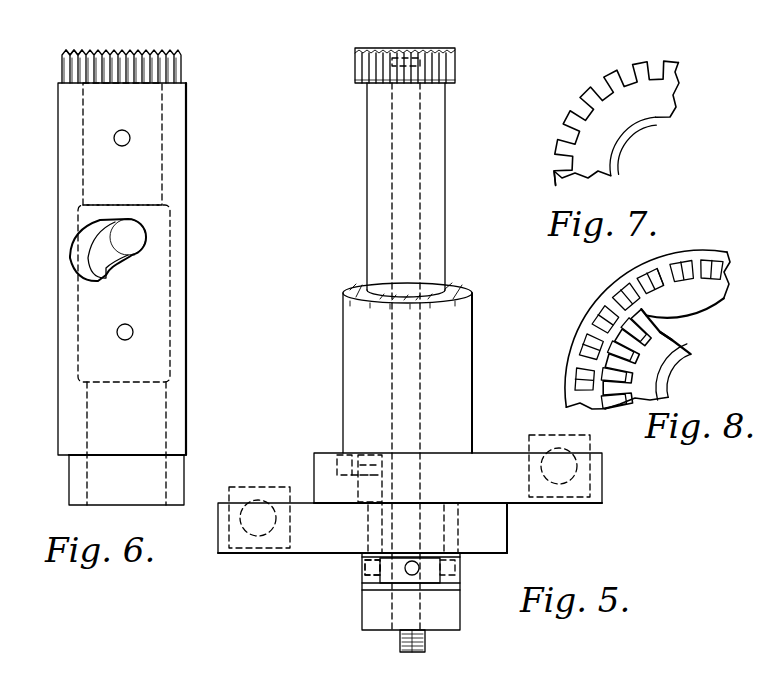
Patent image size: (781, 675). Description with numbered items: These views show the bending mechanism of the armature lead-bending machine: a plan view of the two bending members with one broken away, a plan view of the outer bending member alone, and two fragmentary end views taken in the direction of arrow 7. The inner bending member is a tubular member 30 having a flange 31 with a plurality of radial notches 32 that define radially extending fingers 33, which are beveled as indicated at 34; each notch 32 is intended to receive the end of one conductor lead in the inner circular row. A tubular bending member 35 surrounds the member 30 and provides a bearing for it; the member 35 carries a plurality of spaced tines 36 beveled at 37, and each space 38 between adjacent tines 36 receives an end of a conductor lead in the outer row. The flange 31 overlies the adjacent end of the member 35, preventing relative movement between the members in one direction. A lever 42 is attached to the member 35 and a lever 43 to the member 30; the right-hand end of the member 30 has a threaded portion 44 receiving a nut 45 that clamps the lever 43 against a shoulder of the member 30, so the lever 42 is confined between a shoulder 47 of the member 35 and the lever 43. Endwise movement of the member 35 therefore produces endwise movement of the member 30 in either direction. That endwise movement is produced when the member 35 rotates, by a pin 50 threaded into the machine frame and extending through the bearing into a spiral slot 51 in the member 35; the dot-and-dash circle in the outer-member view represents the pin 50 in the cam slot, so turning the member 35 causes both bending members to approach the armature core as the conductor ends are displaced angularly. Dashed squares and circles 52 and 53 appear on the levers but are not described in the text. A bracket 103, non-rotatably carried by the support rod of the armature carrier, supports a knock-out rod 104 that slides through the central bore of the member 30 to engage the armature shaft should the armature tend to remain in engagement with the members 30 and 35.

In FIG. 5, the arrow 7 is at (405, 14).
In FIG. 5, the tubular member 30 is at (373, 213).
In FIG. 7, the tubular member 30 is at (667, 113).
In FIG. 8, the tubular member 30 is at (691, 349).
In FIG. 5, the flange 31 is at (445, 70).
In FIG. 8, the flange 31 is at (660, 333).
In FIG. 8, the radial notches 32 is at (622, 330).
In FIG. 8, the radial extending fingers 33 is at (603, 372).
In FIG. 5, the bevel 34 is at (396, 54).
In FIG. 7, the bevel 34 is at (590, 87).
In FIG. 8, the bevel 34 is at (650, 320).
In FIG. 6, the tubular bending member 35 is at (187, 345).
In FIG. 5, the tubular bending member 35 is at (352, 333).
In FIG. 8, the tubular bending member 35 is at (571, 375).
In FIG. 6, the tines 36 is at (183, 68).
In FIG. 8, the tines 36 is at (708, 235).
In FIG. 6, the bevel 37 is at (114, 50).
In FIG. 8, the bevel 37 is at (676, 265).
In FIG. 8, the space 38 is at (640, 285).
In FIG. 5, the lever 42 is at (602, 492).
In FIG. 5, the lever 43 is at (300, 553).
In FIG. 5, the threaded portion 44 is at (440, 586).
In FIG. 5, the nut 45 is at (362, 570).
In FIG. 6, the shoulder 47 is at (187, 457).
In FIG. 5, the shoulder 47 is at (348, 453).
In FIG. 6, the pin 50 is at (110, 240).
In FIG. 6, the spiral slot 51 is at (100, 253).
In FIG. 5, the mounting hole 52 is at (541, 437).
In FIG. 5, the mounting hole 53 is at (262, 492).
In FIG. 5, the bracket 103 is at (369, 620).
In FIG. 5, the knock-out rod 104 is at (410, 227).